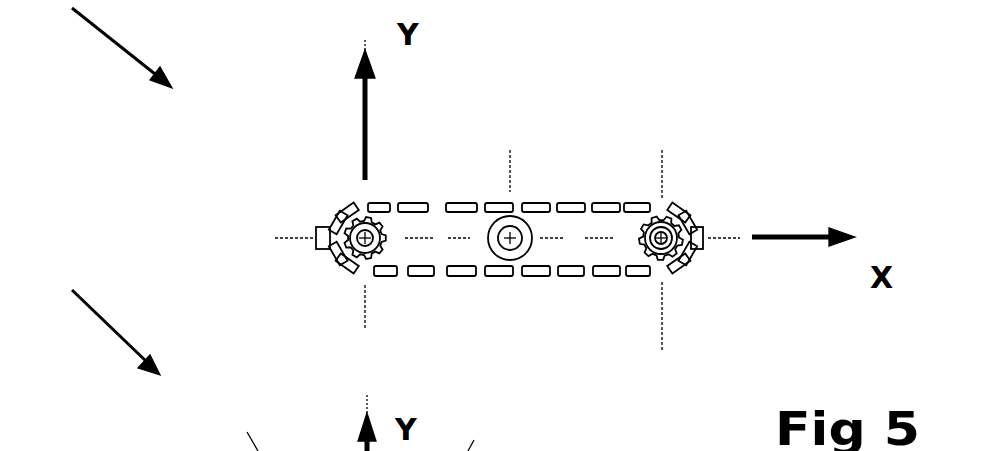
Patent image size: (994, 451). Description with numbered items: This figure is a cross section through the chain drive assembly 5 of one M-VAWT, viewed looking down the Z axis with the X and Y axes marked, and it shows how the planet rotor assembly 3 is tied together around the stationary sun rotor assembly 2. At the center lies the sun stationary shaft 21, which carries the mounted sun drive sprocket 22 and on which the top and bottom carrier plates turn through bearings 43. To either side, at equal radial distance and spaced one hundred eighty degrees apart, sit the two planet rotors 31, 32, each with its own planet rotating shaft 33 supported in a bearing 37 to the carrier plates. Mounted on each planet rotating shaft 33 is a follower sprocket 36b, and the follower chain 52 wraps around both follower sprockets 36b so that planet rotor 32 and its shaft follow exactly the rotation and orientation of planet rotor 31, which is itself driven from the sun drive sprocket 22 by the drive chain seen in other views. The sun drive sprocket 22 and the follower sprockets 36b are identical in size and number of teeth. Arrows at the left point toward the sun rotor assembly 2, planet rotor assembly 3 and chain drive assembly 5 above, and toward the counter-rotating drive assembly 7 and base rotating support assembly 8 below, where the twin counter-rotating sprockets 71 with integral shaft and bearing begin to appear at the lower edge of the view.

The sun rotor assembly 2 is at (102, 198).
The planet rotor assembly 3 is at (102, 57).
The chain drive assembly 5 is at (102, 48).
The counter-rotating drive assembly 7 is at (96, 341).
The base rotating support assembly 8 is at (96, 332).
The sun stationary shaft 21 is at (557, 148).
The sun drive sprocket 22 is at (557, 150).
The bearing 43 is at (511, 238).
The planet rotor 31 is at (663, 238).
The planet rotor 32 is at (365, 238).
The planet rotating shaft 33 is at (513, 165).
The bearing 37 is at (513, 165).
The follower chain 52 is at (493, 203).
The follower sprocket 36b is at (385, 252).
The counter-rotating sprocket 71 is at (360, 438).